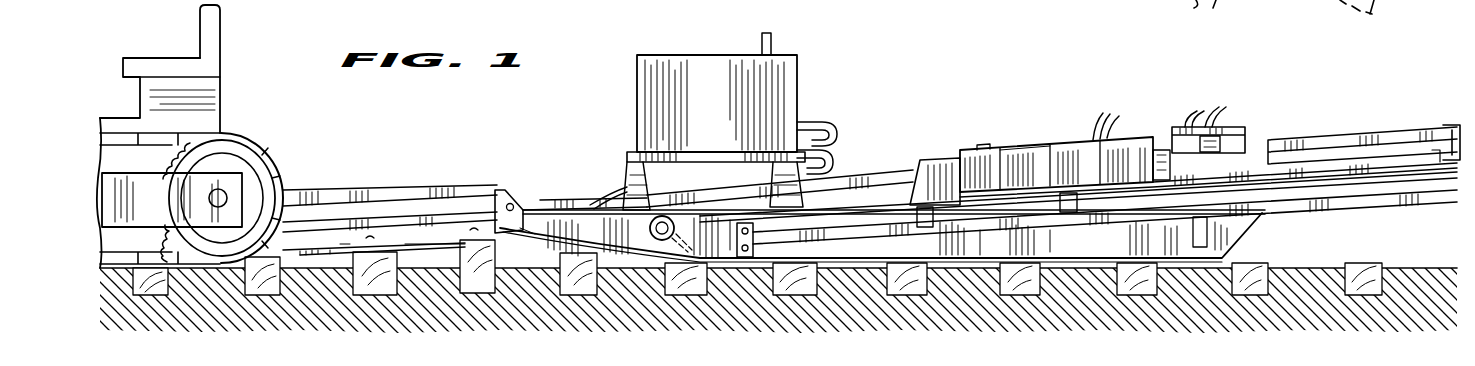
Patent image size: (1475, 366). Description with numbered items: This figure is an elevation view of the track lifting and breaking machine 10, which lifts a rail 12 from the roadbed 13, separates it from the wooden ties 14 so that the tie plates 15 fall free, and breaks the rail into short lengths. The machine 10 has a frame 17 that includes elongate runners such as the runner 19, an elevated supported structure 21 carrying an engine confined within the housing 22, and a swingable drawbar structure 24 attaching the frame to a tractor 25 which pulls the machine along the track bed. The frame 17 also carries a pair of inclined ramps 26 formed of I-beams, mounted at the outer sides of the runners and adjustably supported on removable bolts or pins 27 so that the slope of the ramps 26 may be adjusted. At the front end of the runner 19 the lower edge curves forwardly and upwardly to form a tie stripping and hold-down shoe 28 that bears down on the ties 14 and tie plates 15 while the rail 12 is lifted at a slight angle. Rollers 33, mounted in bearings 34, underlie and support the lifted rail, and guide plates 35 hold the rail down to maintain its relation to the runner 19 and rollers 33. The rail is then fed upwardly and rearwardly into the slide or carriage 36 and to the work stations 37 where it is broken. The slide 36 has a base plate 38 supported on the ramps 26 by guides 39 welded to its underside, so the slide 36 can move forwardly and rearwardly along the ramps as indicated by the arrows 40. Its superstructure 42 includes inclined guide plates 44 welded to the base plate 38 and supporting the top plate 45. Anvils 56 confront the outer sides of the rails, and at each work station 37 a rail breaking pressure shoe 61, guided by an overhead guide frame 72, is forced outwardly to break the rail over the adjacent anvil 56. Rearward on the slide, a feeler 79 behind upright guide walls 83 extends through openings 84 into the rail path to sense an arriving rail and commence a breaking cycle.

The machine 10 is at (1053, 98).
The rail 12 is at (330, 233).
The roadbed 13 is at (413, 266).
The ties 14 is at (477, 254).
The tie plates 15 is at (337, 247).
The frame 17 is at (570, 207).
The runner 19 is at (627, 240).
The elevated supported structure 21 is at (627, 180).
The housing 22 is at (777, 93).
The swingable drawbar structure 24 is at (367, 200).
The tractor 25 is at (233, 135).
The inclined ramps 26 is at (1312, 195).
The removable bolts or pins 27 is at (753, 240).
The tie stripping and hold-down shoes 28 is at (527, 233).
The rollers 33 is at (657, 240).
The bearings 34 is at (675, 238).
The guide plates 35 is at (500, 207).
The slide or carriage 36 is at (995, 130).
The work stations 37 is at (1216, 105).
The base plate 38 is at (952, 200).
The guides 39 is at (922, 227).
The arrows 40 is at (1050, 100).
The superstructure 42 is at (917, 167).
The guide plates 44 is at (992, 185).
The top plate or panel 45 is at (1017, 200).
The anvils or fulcrums 56 is at (1160, 153).
The rail breaking pressure shoe 61 is at (1222, 146).
The overhead guide frame 72 is at (1240, 126).
The feeler 79 is at (1432, 133).
The upright guide walls 83 is at (1405, 133).
The openings 84 is at (1438, 150).